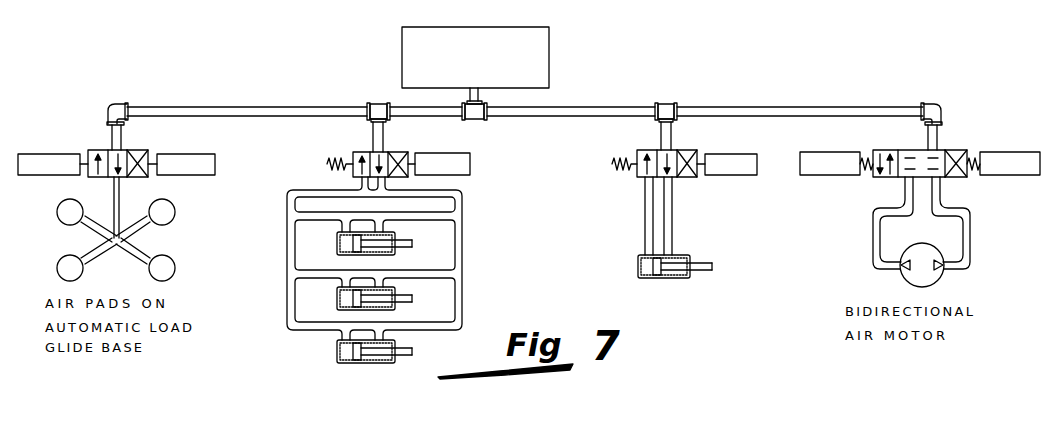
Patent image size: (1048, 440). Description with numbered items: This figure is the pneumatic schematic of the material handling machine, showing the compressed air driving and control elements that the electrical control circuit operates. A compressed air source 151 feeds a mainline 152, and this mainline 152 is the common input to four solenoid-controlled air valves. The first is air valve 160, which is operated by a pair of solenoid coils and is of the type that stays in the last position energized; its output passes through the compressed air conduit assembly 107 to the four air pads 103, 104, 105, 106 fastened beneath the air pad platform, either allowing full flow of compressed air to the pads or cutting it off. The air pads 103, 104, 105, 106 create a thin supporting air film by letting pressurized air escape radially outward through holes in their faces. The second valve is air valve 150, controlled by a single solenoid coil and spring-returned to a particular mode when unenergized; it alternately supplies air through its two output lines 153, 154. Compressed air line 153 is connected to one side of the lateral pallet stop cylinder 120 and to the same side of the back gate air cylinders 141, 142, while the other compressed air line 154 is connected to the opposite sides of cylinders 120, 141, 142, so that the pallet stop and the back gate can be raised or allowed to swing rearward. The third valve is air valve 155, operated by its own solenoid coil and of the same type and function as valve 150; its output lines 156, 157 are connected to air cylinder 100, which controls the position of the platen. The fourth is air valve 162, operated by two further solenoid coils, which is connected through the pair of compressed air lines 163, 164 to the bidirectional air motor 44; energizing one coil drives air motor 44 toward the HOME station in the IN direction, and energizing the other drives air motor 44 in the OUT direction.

The compressed air source 151 is at (549, 44).
The mainline 152 is at (263, 107).
The air valve 160 is at (134, 150).
The compressed air conduit assembly 107 is at (120, 191).
The air pad 105 is at (58, 209).
The air pad 106 is at (175, 215).
The air pad 103 is at (58, 264).
The air pad 104 is at (175, 268).
The air valve 150 is at (390, 152).
The compressed air line 153 is at (287, 296).
The compressed air line 154 is at (462, 243).
The lateral pallet stop cylinder 120 is at (394, 235).
The air cylinder 141 is at (394, 290).
The air cylinder 142 is at (337, 358).
The air valve 155 is at (676, 150).
The compressed air output line 156 is at (645, 229).
The compressed air output line 157 is at (672, 218).
The air cylinder 100 is at (666, 278).
The air valve 162 is at (940, 150).
The compressed air line 163 is at (873, 232).
The compressed air line 164 is at (970, 232).
The air motor 44 is at (940, 277).